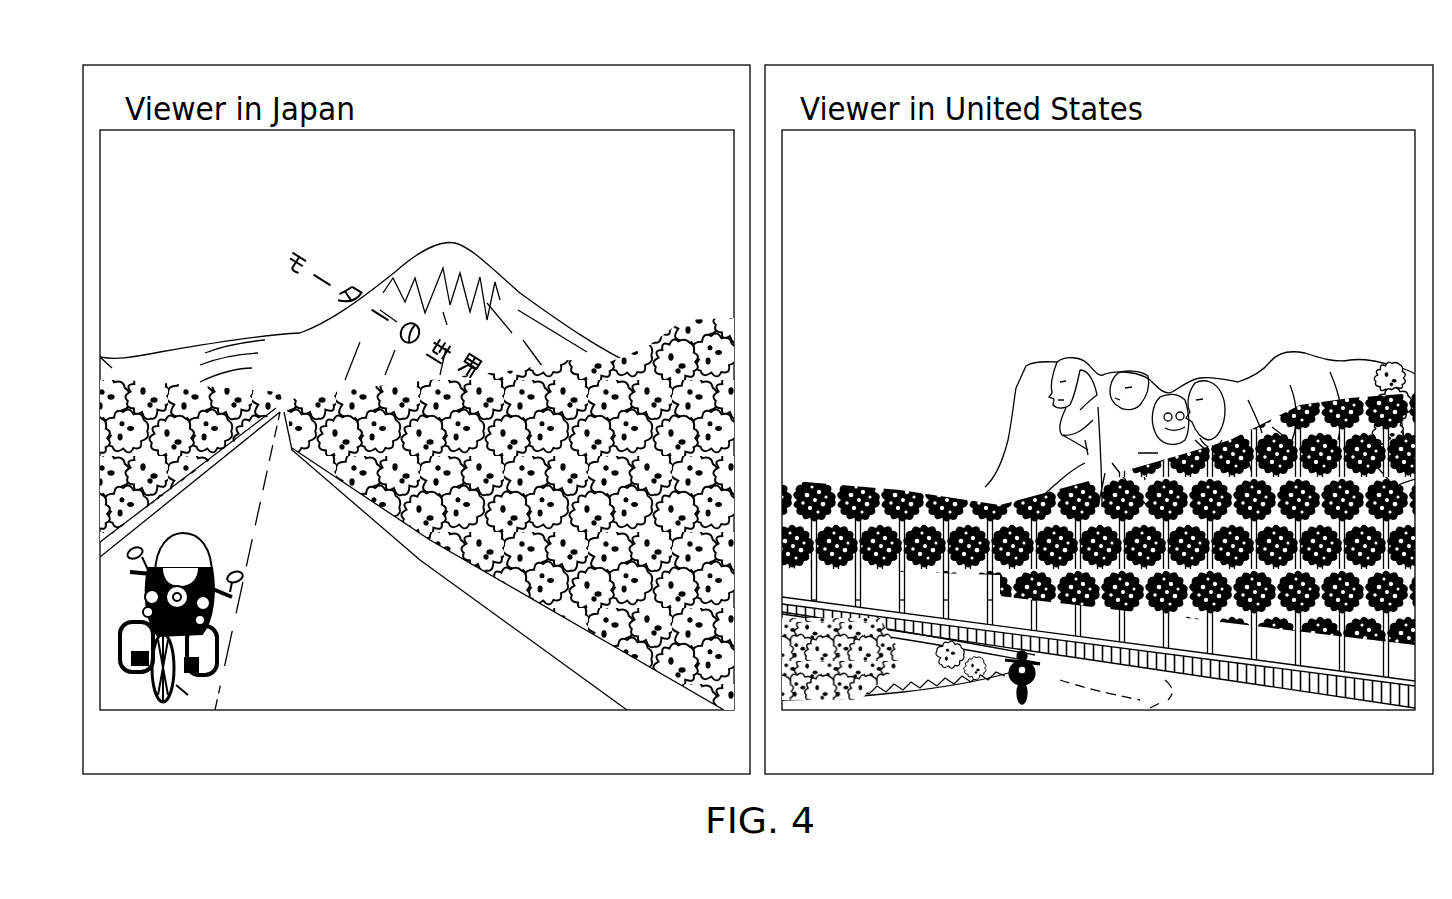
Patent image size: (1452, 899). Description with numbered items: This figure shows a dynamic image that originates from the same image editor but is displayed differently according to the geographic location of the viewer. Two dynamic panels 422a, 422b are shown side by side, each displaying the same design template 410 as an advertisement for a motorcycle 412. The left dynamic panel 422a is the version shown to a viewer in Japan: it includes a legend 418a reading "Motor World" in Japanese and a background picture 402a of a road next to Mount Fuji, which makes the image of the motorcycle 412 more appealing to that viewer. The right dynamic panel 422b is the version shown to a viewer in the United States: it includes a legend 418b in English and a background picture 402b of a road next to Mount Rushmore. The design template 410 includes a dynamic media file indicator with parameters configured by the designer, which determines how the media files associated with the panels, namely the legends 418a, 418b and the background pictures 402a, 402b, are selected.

The dynamic panel 422a is at (676, 66).
The dynamic panel 422b is at (1356, 66).
The design template 410 is at (656, 130).
The background picture 402a is at (417, 441).
The background picture 402b is at (1098, 440).
The legend 418a is at (315, 258).
The legend 418b is at (982, 290).
The motorcycle 412 is at (232, 600).